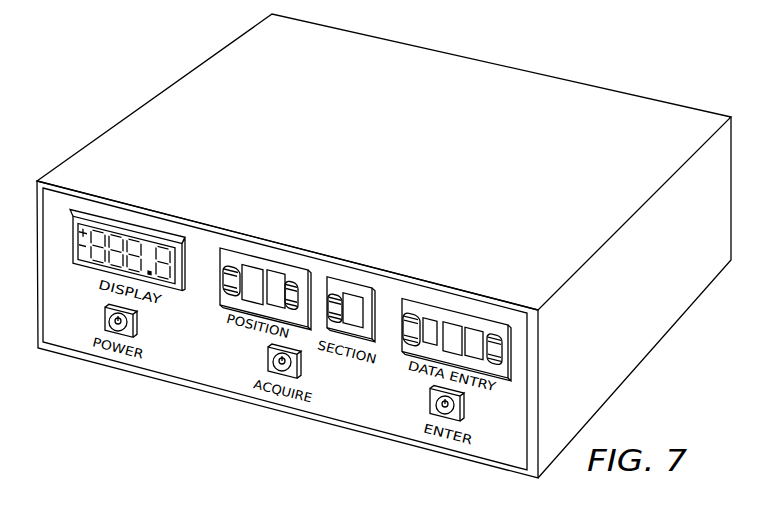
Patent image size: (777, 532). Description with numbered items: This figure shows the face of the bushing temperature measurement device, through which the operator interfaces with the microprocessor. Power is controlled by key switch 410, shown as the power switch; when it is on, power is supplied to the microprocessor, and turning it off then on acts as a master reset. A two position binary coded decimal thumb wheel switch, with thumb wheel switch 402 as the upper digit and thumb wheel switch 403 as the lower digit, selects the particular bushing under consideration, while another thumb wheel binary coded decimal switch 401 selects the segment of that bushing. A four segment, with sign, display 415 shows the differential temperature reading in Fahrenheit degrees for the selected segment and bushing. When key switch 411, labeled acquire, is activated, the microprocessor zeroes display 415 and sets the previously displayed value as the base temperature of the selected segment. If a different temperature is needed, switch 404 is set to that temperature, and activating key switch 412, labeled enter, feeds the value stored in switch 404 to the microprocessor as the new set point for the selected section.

The display 415 is at (137, 230).
The key switch 410 is at (105, 317).
The thumb wheel switch 402 is at (252, 262).
The thumb wheel switch 403 is at (277, 270).
The thumb wheel binary coded decimal switch 401 is at (347, 282).
The switch 404 is at (499, 274).
The key switch 411 is at (268, 358).
The key switch 412 is at (430, 399).